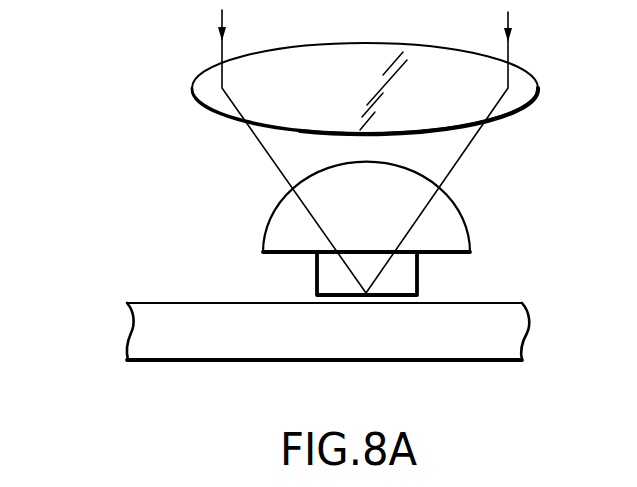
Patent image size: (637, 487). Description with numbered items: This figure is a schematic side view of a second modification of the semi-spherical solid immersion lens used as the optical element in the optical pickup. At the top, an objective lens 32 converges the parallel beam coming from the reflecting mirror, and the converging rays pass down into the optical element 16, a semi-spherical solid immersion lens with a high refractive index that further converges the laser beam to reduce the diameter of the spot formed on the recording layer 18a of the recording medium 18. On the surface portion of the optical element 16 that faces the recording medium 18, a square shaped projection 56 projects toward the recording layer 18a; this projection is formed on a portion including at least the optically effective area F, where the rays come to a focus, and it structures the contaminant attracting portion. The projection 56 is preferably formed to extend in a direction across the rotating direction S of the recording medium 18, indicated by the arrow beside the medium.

The objective lens 32 is at (205, 88).
The optical element 16 is at (282, 222).
The square shaped projection 56 is at (407, 275).
The recording medium 18 is at (115, 333).
The recording layer 18a is at (172, 303).
The optically effective area F is at (370, 308).
The rotating direction S is at (584, 335).